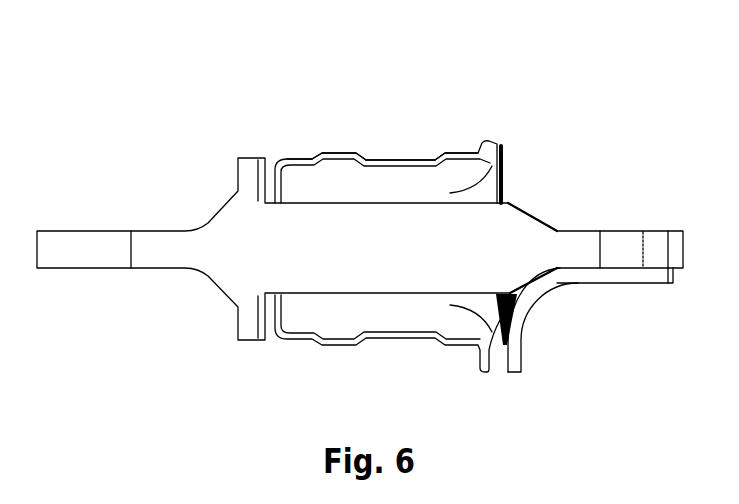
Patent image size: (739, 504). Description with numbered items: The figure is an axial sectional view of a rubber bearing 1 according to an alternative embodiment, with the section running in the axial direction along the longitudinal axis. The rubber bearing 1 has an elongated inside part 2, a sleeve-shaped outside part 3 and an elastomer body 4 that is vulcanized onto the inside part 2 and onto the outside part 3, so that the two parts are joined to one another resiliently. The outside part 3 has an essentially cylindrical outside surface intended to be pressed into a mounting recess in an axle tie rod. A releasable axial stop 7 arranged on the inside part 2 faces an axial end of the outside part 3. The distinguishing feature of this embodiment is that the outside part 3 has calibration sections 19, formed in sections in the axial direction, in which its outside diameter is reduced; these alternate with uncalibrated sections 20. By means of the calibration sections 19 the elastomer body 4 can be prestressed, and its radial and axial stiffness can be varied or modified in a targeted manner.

The rubber bearing 1 is at (98, 93).
The inside part 2 is at (237, 263).
The outside part 3 is at (363, 196).
The elastomer body 4 is at (500, 162).
The releasable axial stop 7 is at (540, 300).
The calibration sections 19 is at (298, 157).
The uncalibrated sections 20 is at (335, 153).